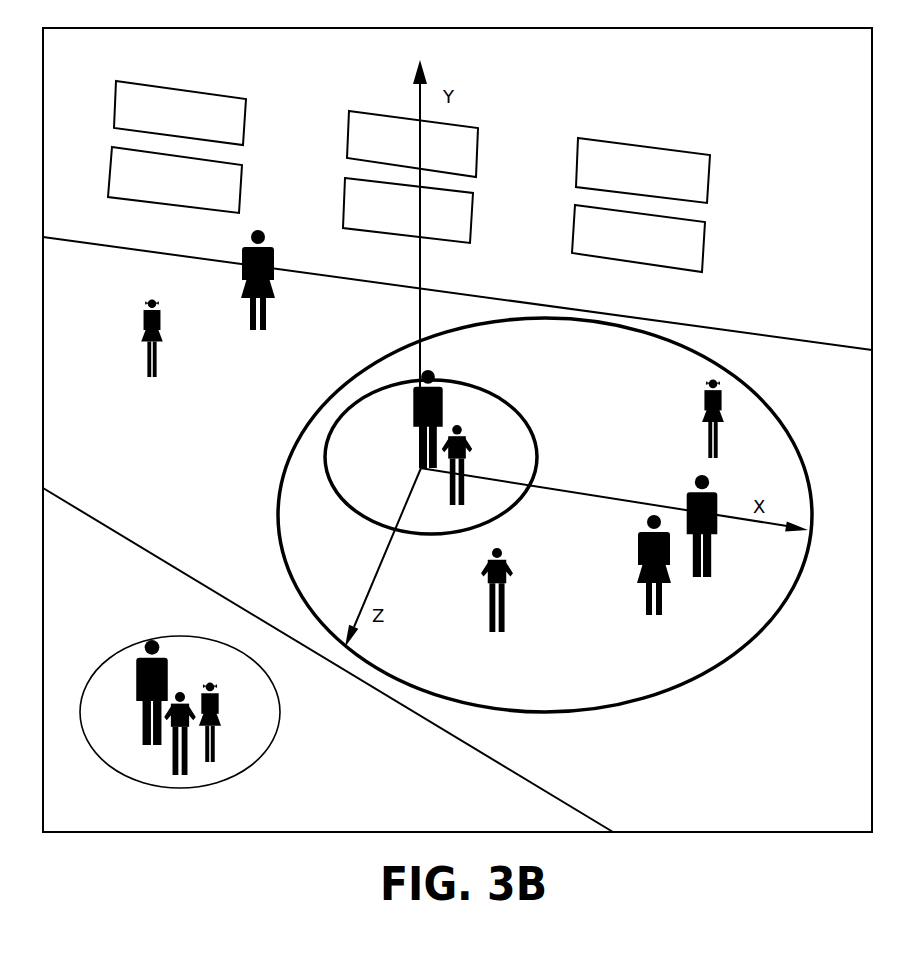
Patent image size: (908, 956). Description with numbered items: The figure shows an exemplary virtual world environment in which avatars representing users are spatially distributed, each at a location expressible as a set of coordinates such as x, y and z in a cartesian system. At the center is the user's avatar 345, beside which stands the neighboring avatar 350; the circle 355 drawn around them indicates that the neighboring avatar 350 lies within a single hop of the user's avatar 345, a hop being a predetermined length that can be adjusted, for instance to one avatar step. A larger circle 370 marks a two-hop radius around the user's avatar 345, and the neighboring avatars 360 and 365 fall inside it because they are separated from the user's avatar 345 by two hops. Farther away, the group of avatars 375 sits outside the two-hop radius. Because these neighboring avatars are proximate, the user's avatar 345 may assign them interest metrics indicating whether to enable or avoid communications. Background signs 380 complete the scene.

The user's avatar 345 is at (410, 412).
The neighboring avatar 350 is at (472, 440).
The circle 355 is at (491, 392).
The neighboring avatar 360 is at (727, 424).
The neighboring avatar 365 is at (672, 573).
The circle 370 is at (720, 668).
The group of avatars 375 is at (188, 636).
The signs / display panels in the background 380 is at (457, 127).